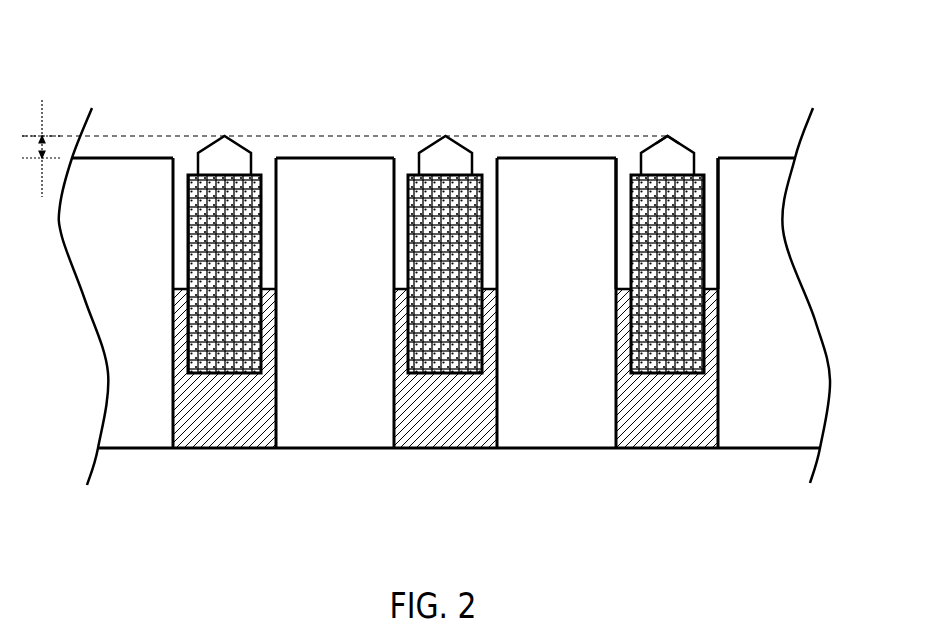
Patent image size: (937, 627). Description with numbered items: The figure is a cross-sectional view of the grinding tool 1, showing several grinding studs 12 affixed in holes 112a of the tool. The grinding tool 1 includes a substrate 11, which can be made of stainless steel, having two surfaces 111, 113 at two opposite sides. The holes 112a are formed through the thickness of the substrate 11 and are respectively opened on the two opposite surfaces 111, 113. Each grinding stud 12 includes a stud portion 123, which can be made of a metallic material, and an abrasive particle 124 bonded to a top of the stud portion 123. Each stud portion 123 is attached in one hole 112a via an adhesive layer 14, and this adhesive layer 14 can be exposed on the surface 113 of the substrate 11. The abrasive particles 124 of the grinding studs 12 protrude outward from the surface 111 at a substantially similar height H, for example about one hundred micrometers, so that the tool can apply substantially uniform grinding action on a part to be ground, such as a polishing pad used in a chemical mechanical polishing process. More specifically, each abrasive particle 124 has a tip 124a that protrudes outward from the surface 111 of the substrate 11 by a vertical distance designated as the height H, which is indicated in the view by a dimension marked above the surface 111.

The grinding tool 1 is at (93, 61).
The substrate 11 is at (800, 422).
The surface 111 is at (760, 157).
The surface 113 is at (763, 449).
The hole 112a is at (627, 170).
The grinding stud 12 is at (522, 207).
The stud portion 123 is at (687, 255).
The abrasive particle 124 is at (680, 147).
The tip 124a is at (667, 136).
The adhesive layer 14 is at (720, 340).